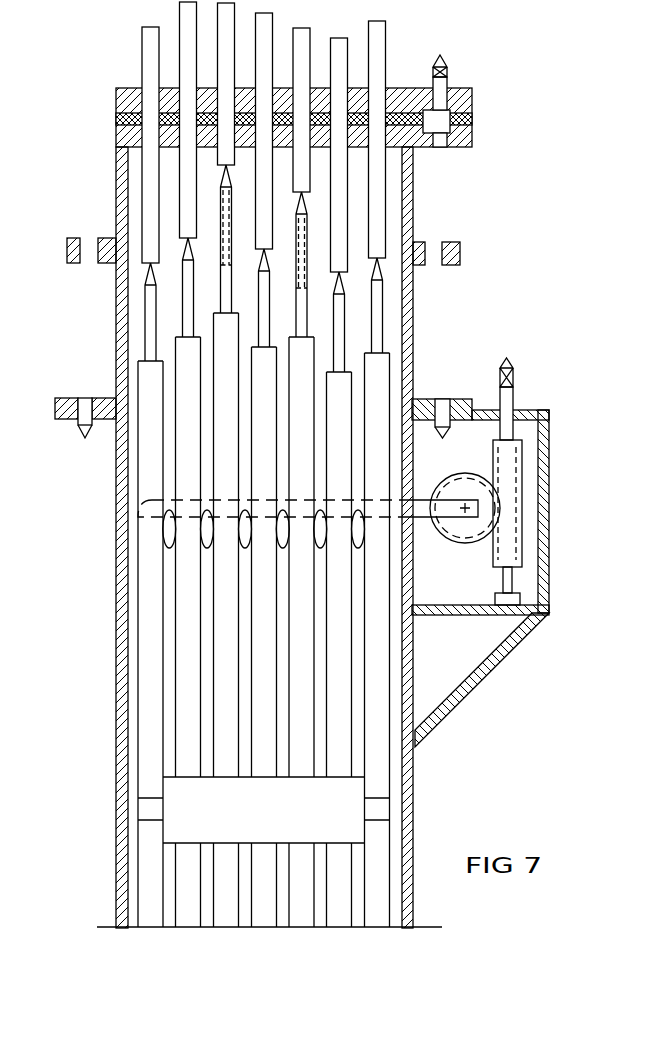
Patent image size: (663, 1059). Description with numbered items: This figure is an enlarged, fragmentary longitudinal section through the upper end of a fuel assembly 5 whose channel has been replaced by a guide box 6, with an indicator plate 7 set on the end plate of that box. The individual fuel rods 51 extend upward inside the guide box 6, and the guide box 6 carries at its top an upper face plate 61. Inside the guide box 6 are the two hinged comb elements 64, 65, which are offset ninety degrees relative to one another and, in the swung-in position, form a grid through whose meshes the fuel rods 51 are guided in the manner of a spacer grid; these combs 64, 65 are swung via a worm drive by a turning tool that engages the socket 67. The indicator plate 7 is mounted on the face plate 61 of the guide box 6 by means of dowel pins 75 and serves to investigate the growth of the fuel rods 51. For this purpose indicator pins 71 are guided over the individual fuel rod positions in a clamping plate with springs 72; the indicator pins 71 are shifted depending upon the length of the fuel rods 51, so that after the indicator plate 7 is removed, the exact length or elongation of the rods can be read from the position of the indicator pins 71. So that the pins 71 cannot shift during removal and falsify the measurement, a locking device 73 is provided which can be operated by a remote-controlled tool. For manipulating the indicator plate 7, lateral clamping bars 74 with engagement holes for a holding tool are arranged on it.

The indicator pins 71 is at (335, 65).
The clamping plate with springs 72 is at (116, 120).
The locking device 73 is at (447, 76).
The lateral clamping bars 74 is at (88, 263).
The indicator plate 7 is at (403, 223).
The dowel pins 75 is at (92, 437).
The upper face plate 61 is at (60, 422).
The socket 67 is at (504, 400).
The hinged comb element 64 is at (473, 503).
The hinged comb element 65 is at (308, 524).
The guide box 6 is at (545, 556).
The fuel rods 51 is at (147, 706).
The fuel assembly 5 is at (345, 813).